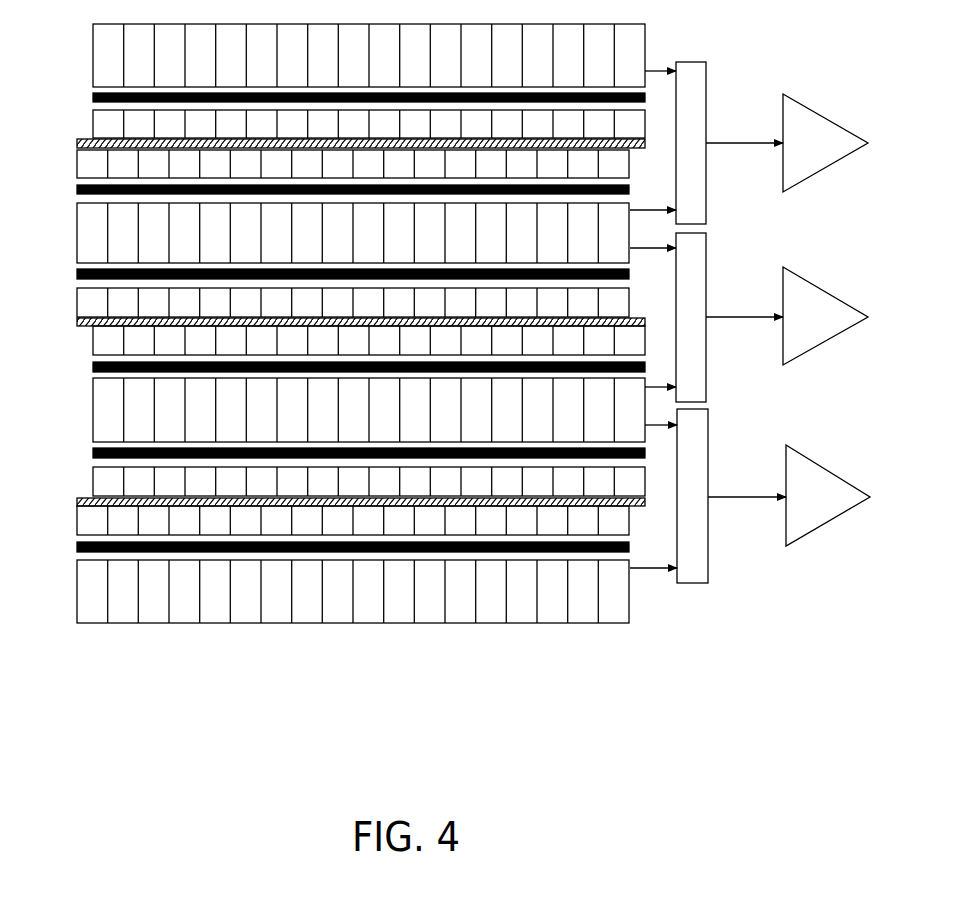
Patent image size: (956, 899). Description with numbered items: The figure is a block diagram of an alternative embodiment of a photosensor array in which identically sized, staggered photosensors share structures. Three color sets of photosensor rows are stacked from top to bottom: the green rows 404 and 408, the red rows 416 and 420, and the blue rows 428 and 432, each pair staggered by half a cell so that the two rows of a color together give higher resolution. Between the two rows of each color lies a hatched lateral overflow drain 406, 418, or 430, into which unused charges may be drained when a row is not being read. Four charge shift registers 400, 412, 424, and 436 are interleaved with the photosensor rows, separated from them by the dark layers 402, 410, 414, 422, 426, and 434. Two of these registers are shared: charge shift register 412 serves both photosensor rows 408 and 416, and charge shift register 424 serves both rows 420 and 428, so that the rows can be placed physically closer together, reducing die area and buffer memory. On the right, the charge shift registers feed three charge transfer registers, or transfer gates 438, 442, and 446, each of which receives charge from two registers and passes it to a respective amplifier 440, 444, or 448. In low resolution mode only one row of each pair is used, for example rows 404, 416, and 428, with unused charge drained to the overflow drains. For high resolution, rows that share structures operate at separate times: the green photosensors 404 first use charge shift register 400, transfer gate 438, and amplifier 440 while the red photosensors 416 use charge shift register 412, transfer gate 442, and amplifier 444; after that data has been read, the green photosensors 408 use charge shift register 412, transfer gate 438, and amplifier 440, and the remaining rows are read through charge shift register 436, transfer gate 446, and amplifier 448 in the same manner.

The charge shift register 400 is at (93, 52).
The first light blocking layer 402 is at (93, 97).
The green photosensor row 404 is at (93, 122).
The lateral overflow drain 406 is at (77, 143).
The green photosensor row 408 is at (77, 162).
The second light blocking layer 410 is at (77, 189).
The charge shift register 412 is at (77, 232).
The third light blocking layer 414 is at (77, 273).
The red photosensor row 416 is at (77, 300).
The lateral overflow drain 418 is at (77, 322).
The red photosensor row 420 is at (93, 343).
The fourth light blocking layer 422 is at (93, 366).
The charge shift register 424 is at (93, 408).
The fifth light blocking layer 426 is at (93, 452).
The blue photosensor row 428 is at (93, 478).
The lateral overflow drain 430 is at (77, 502).
The blue photosensor row 432 is at (77, 522).
The sixth light blocking layer 434 is at (77, 546).
The charge shift register 436 is at (77, 592).
The transfer gate 438 is at (706, 83).
The amplifier 440 is at (793, 153).
The transfer gate 442 is at (706, 254).
The amplifier 444 is at (793, 327).
The transfer gate 446 is at (708, 439).
The amplifier 448 is at (795, 507).